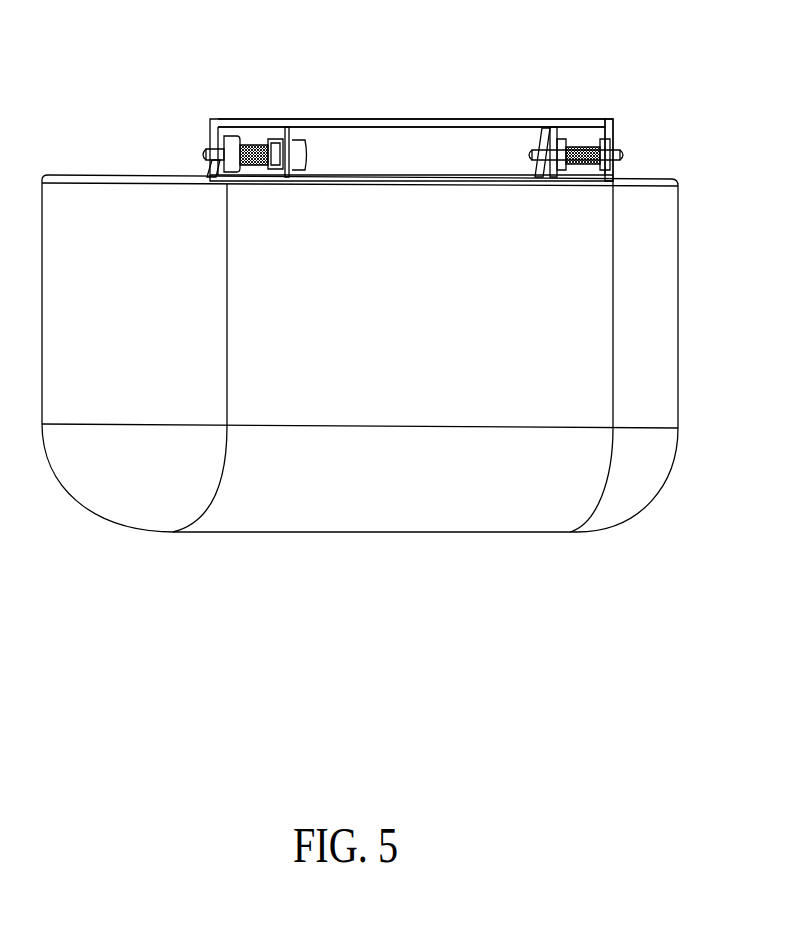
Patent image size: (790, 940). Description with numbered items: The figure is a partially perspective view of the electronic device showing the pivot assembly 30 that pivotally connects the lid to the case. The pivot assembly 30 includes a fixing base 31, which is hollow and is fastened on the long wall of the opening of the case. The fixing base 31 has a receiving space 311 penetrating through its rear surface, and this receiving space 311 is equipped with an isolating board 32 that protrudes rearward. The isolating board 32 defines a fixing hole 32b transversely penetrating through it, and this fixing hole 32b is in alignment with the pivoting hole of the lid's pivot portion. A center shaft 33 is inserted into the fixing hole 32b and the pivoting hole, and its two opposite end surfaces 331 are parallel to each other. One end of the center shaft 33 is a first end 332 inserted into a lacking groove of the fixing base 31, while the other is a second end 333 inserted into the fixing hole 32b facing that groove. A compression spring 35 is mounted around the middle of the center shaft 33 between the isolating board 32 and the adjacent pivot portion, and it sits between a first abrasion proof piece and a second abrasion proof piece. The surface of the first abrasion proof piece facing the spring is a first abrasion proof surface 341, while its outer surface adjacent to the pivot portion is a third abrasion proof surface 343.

The pivot assembly 30 is at (380, 119).
The receiving space 311 is at (450, 119).
The fixing base 31 is at (600, 119).
The isolating board 32 is at (540, 127).
The fixing hole 32b is at (545, 181).
The center shaft 33 is at (625, 151).
The end surfaces 331 is at (204, 155).
The first end 332 is at (222, 148).
The second end 333 is at (298, 140).
The first abrasion proof surface 341 is at (600, 181).
The third abrasion proof surface 343 is at (215, 181).
The compression spring 35 is at (258, 145).